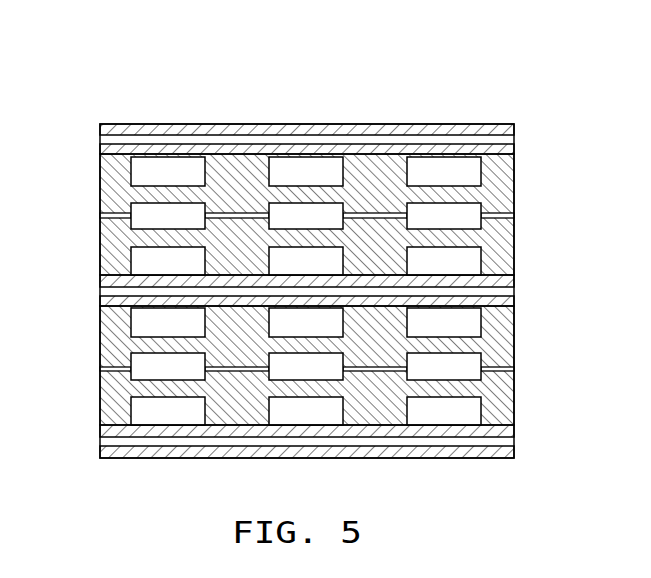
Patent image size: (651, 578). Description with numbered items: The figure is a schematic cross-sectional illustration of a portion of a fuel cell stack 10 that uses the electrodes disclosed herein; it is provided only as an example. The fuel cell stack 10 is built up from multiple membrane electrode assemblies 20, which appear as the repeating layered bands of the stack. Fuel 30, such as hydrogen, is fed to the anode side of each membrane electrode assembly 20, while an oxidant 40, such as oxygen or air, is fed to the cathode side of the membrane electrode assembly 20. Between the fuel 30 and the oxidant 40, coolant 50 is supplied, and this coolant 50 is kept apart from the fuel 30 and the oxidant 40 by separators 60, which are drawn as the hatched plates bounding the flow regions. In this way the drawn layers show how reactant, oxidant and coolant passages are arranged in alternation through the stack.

The fuel cell stack 10 is at (306, 240).
The membrane electrode assembly 20 is at (332, 289).
The fuel 30 is at (142, 176).
The oxidant 40 is at (150, 262).
The coolant 50 is at (142, 229).
The separator 60 is at (306, 276).